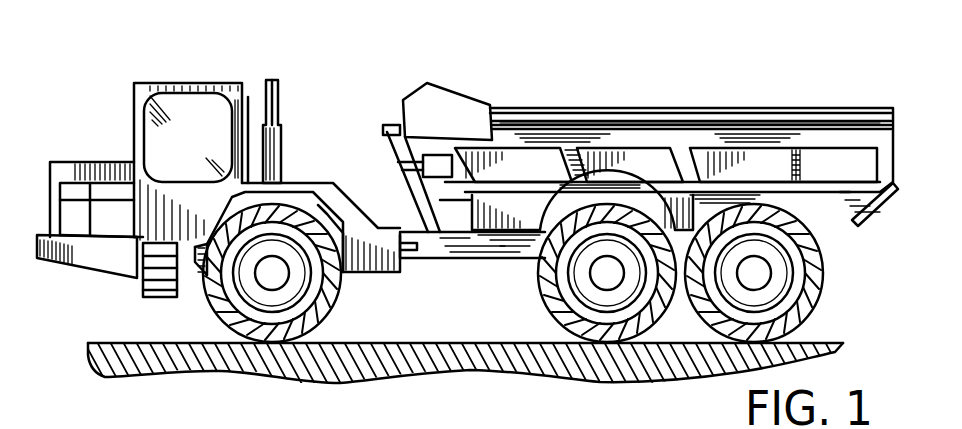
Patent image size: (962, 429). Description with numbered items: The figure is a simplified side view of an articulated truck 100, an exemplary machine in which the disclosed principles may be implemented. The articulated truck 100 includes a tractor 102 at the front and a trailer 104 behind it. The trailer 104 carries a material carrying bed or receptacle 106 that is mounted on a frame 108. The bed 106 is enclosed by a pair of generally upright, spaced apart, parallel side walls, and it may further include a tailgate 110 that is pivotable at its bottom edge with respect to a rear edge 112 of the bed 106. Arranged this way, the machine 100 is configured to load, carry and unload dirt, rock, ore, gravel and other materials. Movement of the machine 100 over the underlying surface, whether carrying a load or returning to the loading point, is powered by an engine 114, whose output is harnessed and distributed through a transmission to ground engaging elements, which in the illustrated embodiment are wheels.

The articulated truck 100 is at (306, 52).
The tractor 102 is at (62, 133).
The trailer 104 is at (645, 79).
The material carrying bed 106 is at (818, 108).
The frame 108 is at (477, 259).
The tailgate 110 is at (860, 212).
The rear edge 112 is at (853, 233).
The engine 114 is at (117, 193).